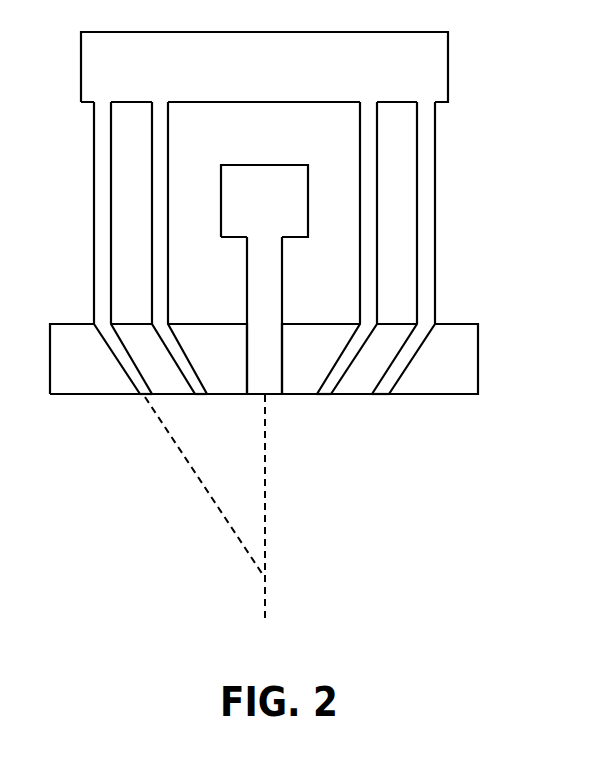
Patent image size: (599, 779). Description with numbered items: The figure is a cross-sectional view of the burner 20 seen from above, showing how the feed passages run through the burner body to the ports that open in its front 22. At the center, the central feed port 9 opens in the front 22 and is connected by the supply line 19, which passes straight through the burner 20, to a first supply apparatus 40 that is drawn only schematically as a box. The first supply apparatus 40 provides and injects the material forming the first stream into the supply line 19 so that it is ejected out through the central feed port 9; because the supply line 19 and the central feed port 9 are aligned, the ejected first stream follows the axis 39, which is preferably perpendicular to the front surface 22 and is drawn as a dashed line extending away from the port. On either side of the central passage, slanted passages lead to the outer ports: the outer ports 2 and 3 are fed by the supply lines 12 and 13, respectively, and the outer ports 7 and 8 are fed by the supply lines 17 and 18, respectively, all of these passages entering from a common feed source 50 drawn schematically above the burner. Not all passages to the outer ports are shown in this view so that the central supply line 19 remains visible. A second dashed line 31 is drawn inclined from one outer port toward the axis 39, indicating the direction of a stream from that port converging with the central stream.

The gas supply 50 is at (264, 67).
The first supply apparatus 40 is at (264, 201).
The supply line 19 is at (283, 263).
The burner 20 is at (478, 337).
The supply line 17 is at (125, 371).
The supply line 18 is at (187, 349).
The supply line 12 is at (340, 352).
The supply line 13 is at (408, 363).
The outer port 7 is at (143, 397).
The outer port 8 is at (203, 397).
The central feed port 9 is at (272, 393).
The outer port 2 is at (320, 395).
The outer port 3 is at (382, 395).
The front 22 is at (438, 397).
The axis 39 is at (265, 498).
The gas jet axis 31 is at (225, 518).